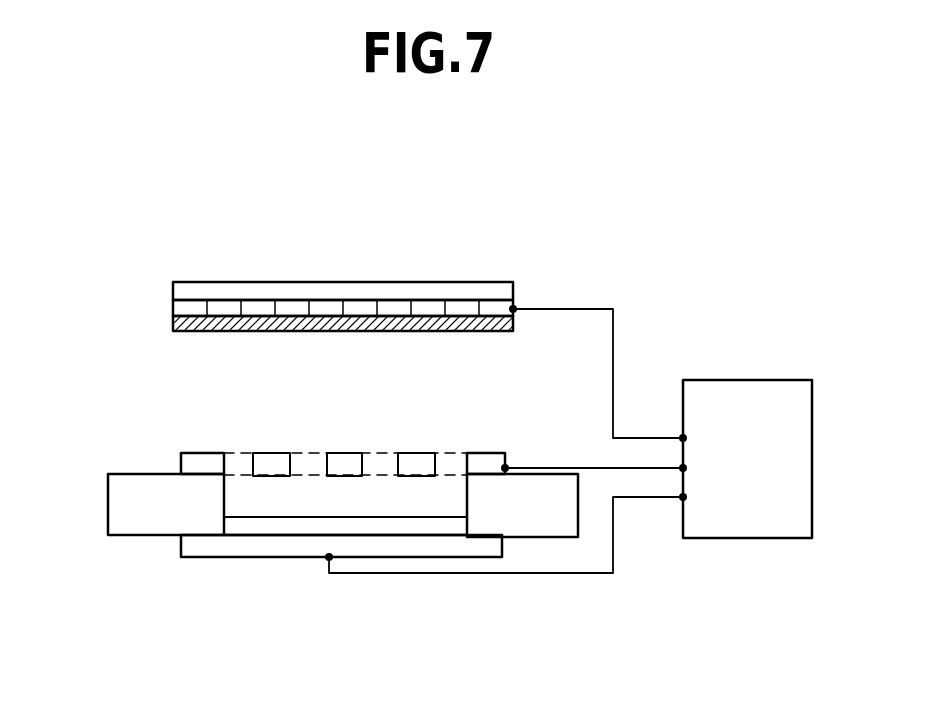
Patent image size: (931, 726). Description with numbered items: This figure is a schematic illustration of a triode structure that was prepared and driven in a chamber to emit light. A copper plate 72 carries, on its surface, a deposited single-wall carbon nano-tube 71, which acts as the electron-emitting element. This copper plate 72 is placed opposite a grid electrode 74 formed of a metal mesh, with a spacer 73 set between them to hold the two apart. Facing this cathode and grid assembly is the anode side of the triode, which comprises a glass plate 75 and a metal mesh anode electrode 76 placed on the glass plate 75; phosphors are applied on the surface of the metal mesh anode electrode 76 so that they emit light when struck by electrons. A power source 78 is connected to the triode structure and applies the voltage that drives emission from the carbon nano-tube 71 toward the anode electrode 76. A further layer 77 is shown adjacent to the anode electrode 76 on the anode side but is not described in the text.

The single-wall carbon nano-tube 71 is at (244, 530).
The copper plate 72 is at (181, 547).
The spacer 73 is at (118, 507).
The grid electrode 74 is at (181, 467).
The glass plate 75 is at (173, 286).
The metal mesh anode electrode 76 is at (173, 302).
The insulating layer 77 is at (173, 328).
The power source 78 is at (745, 380).